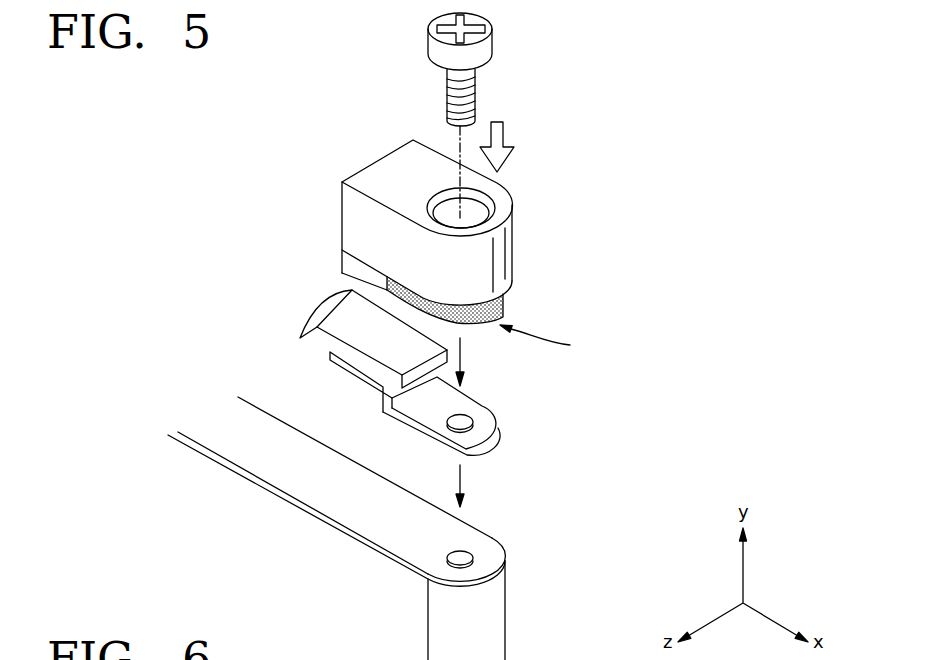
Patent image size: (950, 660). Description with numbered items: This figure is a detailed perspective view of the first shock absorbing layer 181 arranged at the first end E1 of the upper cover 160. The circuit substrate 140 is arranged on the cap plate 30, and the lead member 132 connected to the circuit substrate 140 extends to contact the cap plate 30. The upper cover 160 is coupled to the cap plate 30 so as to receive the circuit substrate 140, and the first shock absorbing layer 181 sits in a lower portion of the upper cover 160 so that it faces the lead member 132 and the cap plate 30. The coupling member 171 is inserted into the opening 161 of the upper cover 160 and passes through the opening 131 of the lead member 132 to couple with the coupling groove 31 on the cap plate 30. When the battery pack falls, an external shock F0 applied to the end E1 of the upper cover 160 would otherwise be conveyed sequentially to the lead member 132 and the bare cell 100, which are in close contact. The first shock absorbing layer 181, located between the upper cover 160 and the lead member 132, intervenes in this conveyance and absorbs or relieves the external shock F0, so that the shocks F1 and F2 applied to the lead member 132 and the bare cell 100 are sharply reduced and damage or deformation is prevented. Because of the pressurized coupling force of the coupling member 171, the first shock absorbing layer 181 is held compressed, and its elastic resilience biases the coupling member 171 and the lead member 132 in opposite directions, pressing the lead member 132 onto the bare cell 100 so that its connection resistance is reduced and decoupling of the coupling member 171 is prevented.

The coupling member 171 is at (437, 50).
The upper cover 160 is at (390, 168).
The opening of upper cover 161 is at (473, 210).
The first shock absorbing layer 181 is at (503, 315).
The first end E1 is at (548, 343).
The external shock F0 is at (497, 133).
The circuit substrate 140 is at (322, 337).
The lead member 132 is at (363, 373).
The opening 131 is at (471, 421).
The shock applied to lead member F1 is at (473, 362).
The shock applied to bare cell F2 is at (474, 486).
The cap plate 30 is at (490, 583).
The coupling groove 31 is at (472, 555).
The bare cell 100 is at (525, 639).